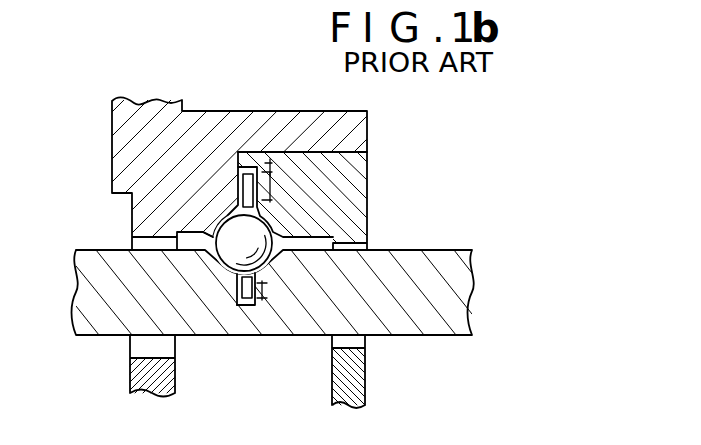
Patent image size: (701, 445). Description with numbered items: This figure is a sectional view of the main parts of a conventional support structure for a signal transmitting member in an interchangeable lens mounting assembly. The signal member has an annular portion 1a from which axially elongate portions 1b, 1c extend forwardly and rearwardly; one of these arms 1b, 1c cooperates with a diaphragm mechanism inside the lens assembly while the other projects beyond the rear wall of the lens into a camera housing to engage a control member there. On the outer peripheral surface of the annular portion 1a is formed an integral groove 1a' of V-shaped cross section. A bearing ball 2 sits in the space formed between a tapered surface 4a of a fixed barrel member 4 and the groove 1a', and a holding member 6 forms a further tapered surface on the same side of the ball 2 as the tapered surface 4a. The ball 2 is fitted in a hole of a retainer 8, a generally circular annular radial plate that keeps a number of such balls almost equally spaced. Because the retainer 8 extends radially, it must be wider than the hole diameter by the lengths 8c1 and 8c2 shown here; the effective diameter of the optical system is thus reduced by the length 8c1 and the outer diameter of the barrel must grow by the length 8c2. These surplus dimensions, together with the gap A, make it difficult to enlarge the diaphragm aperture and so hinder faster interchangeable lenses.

The fixed barrel member 4 is at (218, 122).
The tapered surface 4a is at (217, 229).
The holding member 6 is at (325, 196).
The retainer 8 is at (243, 168).
The gap A is at (273, 170).
The length 8c2 is at (277, 187).
The length 8c1 is at (272, 292).
The bearing ball 2 is at (295, 323).
The annular portion 1a is at (248, 332).
The groove 1a' is at (222, 332).
The axially elongate portion 1b is at (102, 318).
The axially elongate portion 1c is at (413, 330).